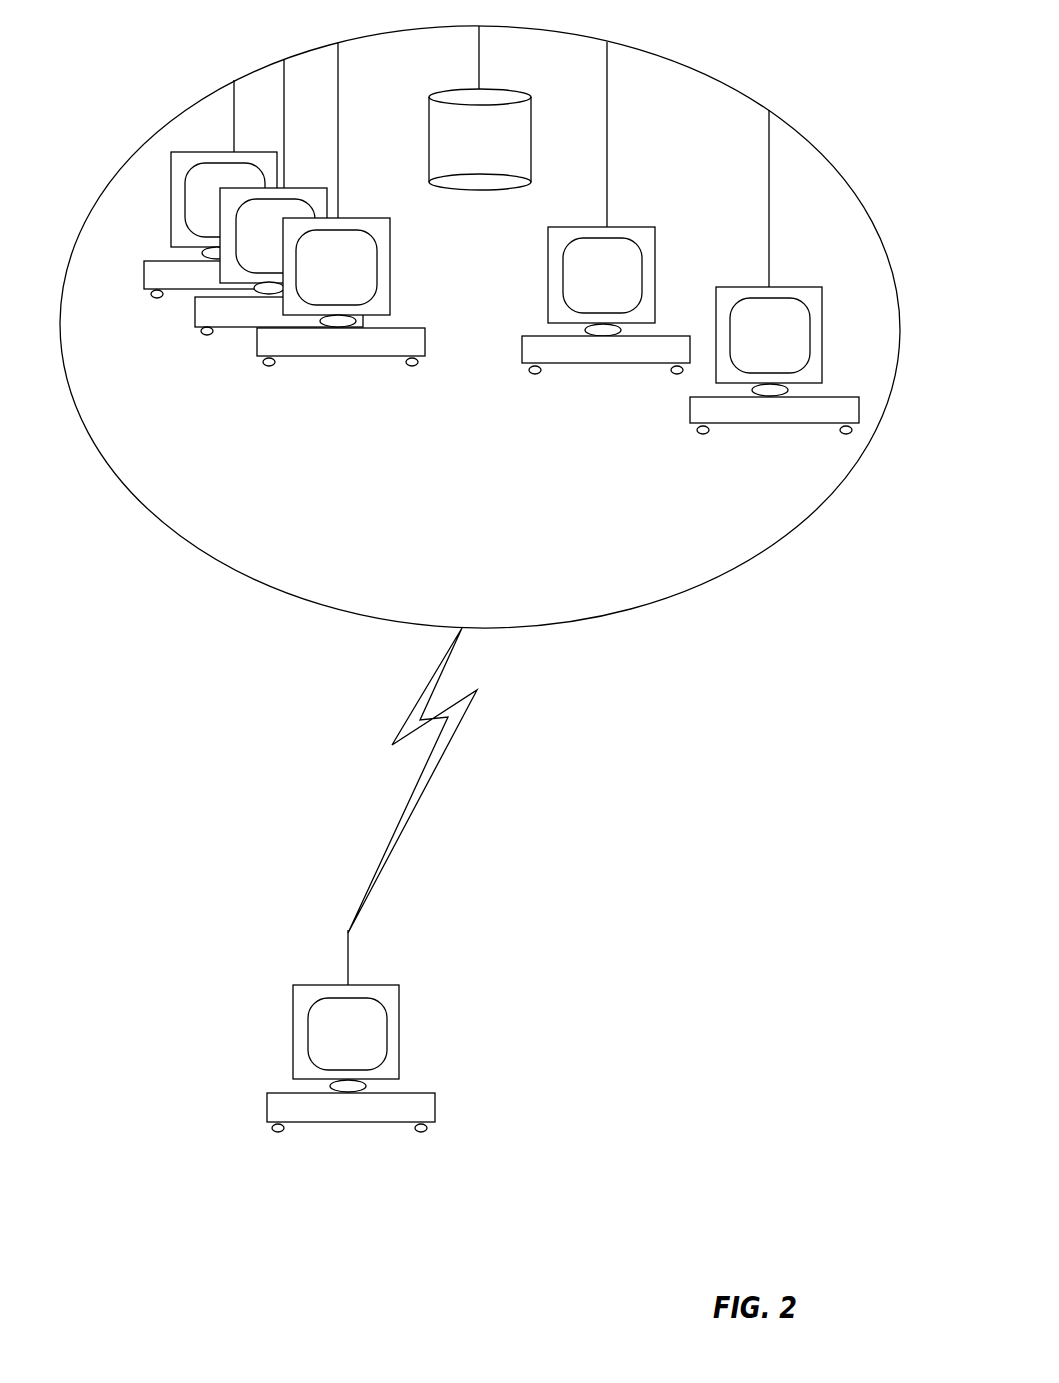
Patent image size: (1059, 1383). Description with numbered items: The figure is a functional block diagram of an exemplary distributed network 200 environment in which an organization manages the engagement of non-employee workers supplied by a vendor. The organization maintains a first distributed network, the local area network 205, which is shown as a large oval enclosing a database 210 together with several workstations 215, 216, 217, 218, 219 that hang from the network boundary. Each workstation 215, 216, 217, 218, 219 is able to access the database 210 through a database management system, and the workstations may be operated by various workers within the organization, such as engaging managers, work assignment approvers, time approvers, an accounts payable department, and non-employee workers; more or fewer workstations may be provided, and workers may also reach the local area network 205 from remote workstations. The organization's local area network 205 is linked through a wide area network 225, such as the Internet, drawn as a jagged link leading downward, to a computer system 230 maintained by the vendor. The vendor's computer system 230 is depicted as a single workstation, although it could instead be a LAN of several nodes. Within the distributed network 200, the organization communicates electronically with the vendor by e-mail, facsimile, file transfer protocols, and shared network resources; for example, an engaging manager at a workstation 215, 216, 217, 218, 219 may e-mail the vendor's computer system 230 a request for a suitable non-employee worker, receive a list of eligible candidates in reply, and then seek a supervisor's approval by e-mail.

The distributed network 200 is at (860, 22).
The local area network 205 is at (152, 517).
The database 210 is at (429, 123).
The workstation 215 is at (144, 275).
The workstation 216 is at (195, 313).
The workstation 217 is at (257, 347).
The workstation 218 is at (522, 350).
The workstation 219 is at (690, 410).
The wide area network 225 is at (392, 735).
The computer system 230 is at (267, 1105).